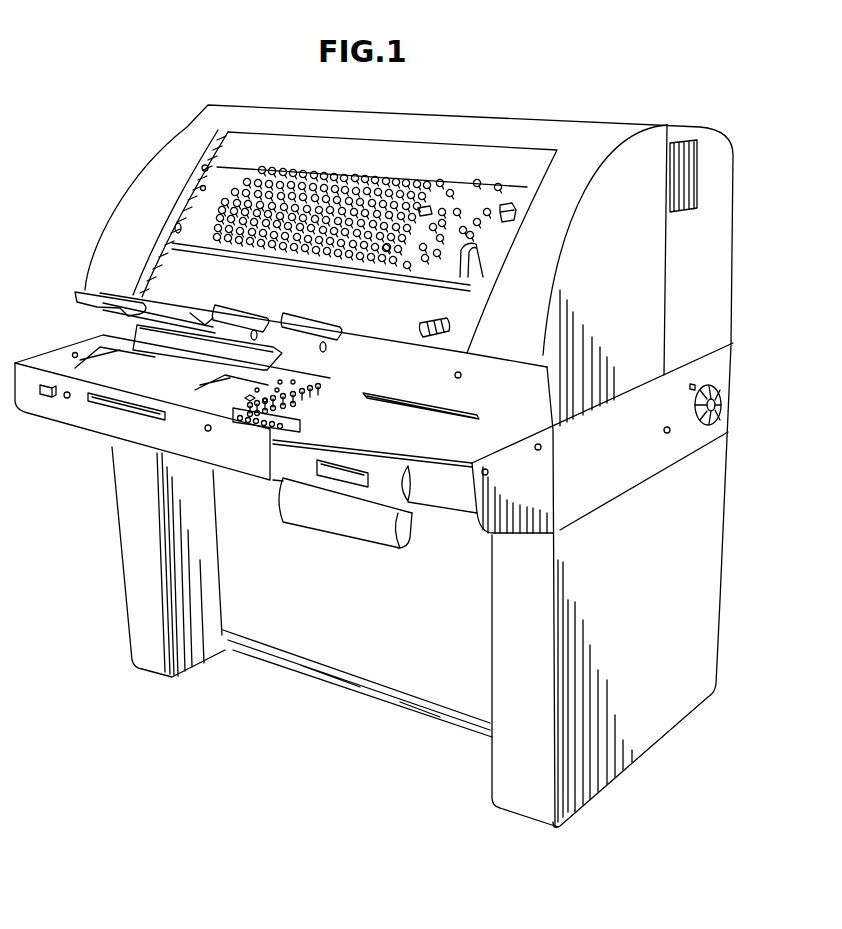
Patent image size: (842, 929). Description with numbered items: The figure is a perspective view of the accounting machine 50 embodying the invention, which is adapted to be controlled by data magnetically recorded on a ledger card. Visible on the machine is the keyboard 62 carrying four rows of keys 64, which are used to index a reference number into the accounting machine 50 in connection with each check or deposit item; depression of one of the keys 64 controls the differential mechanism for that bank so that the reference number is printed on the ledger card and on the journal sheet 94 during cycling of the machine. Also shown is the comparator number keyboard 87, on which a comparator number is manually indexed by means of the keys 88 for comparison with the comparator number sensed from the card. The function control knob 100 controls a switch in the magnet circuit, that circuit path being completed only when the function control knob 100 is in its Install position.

The accounting machine 50 is at (457, 110).
The keyboard 62 is at (493, 237).
The keys 64 is at (258, 250).
The comparator number keyboard 87 is at (257, 424).
The keys 88 is at (300, 408).
The journal sheet 94 is at (345, 513).
The function control knob 100 is at (697, 407).